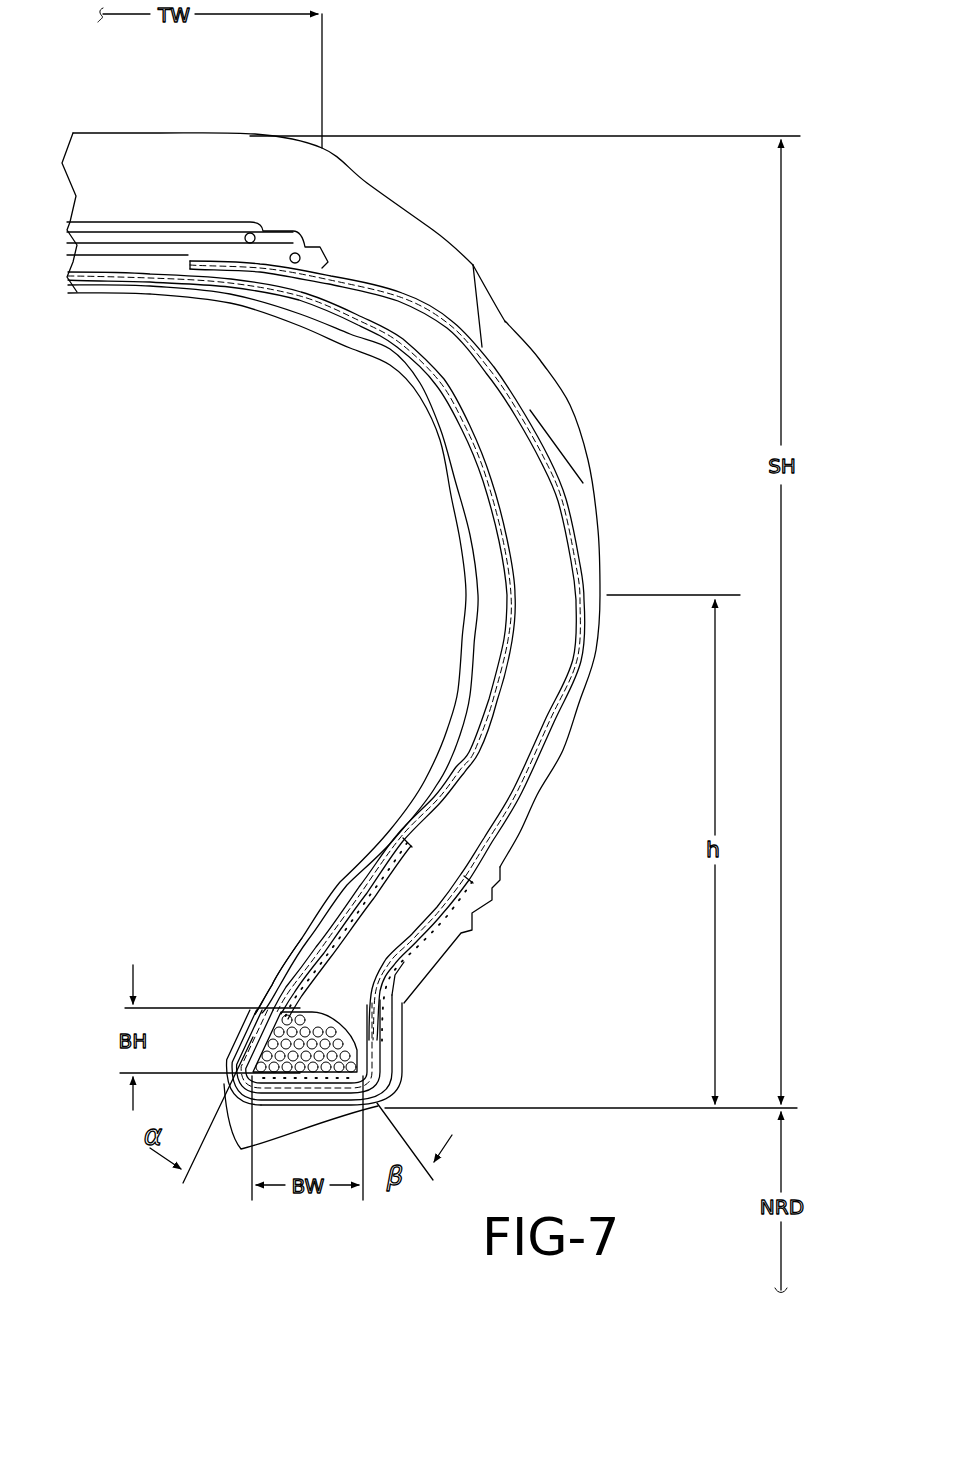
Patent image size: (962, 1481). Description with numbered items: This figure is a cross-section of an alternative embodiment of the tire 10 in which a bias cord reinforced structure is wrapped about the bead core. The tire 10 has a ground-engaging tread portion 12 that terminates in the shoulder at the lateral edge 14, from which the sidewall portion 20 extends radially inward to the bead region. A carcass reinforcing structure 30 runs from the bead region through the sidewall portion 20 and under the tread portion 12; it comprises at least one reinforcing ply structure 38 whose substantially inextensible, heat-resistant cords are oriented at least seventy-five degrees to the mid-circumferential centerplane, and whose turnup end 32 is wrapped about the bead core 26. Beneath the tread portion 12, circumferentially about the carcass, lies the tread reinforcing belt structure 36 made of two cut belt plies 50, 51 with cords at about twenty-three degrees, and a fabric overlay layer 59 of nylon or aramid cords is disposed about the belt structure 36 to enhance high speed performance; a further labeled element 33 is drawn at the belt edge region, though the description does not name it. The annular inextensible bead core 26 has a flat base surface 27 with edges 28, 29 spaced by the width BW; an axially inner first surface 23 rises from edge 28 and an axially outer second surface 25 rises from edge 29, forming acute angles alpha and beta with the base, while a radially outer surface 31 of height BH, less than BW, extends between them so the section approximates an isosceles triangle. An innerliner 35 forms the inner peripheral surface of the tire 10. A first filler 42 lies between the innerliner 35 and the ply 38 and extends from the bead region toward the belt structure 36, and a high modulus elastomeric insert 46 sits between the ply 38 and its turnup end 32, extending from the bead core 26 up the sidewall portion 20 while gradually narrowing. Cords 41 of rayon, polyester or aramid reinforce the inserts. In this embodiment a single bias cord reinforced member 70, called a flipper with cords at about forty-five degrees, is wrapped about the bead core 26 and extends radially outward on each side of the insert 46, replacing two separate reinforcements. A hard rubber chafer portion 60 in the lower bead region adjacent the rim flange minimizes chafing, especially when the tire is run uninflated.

The tire 10 is at (366, 100).
The tread portion 12 is at (96, 133).
The lateral edge of the tread 14 is at (330, 150).
The sidewall portion 20 is at (601, 560).
The axially inner first surface 23 is at (257, 1043).
The axially outer second surface 25 is at (365, 1050).
The bead core 26 is at (313, 1038).
The flat base surface 27 is at (337, 1075).
The edge of the flat base surface 28 is at (247, 1072).
The edge of the flat base surface 29 is at (373, 1073).
The carcass reinforcing structure 30 is at (93, 283).
The radially outer surface of the bead core 31 is at (323, 1017).
The turnup end 32 is at (578, 655).
The carcass ply end 33 is at (188, 262).
The innerliner 35 is at (341, 881).
The tread reinforcing belt structure 36 is at (86, 220).
The reinforcing ply structure 38 is at (505, 630).
The cords 41 is at (497, 495).
The first filler 42 is at (483, 683).
The elastomeric insert 46 is at (531, 582).
The cut belt ply 50 is at (235, 233).
The cut belt ply 51 is at (230, 258).
The fabric overlay layer 59 is at (155, 225).
The hard rubber chafer portion 60 is at (440, 948).
The bias cord reinforced member 70 is at (403, 850).